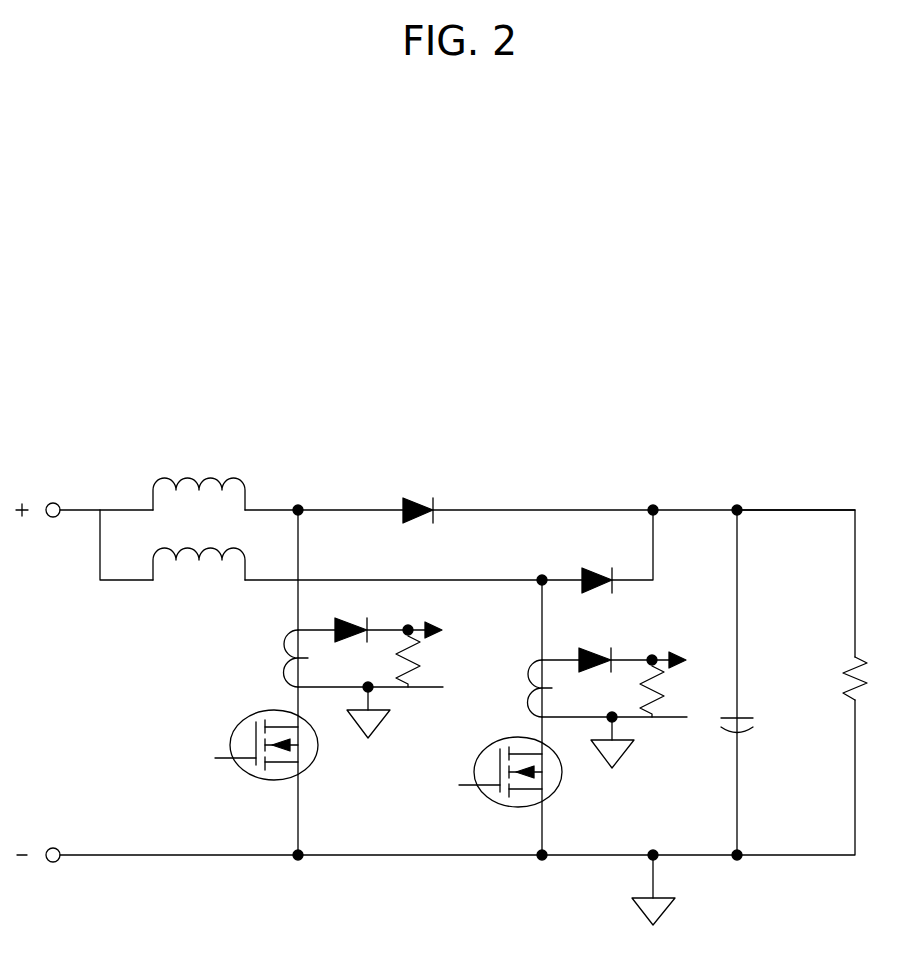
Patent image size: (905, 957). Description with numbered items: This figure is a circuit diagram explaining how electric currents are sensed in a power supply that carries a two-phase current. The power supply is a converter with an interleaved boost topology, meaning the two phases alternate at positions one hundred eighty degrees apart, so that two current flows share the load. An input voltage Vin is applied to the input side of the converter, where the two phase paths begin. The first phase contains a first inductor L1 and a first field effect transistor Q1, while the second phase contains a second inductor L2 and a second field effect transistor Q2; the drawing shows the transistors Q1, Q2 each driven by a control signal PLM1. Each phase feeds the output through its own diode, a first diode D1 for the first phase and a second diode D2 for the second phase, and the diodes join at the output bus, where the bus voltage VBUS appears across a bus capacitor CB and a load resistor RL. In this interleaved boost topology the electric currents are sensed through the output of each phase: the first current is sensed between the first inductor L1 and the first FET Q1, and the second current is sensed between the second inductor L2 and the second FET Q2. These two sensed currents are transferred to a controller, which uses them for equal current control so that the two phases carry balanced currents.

The input voltage Vin is at (35, 682).
The first inductor L1 is at (199, 482).
The second inductor L2 is at (199, 550).
The first diode D1 is at (436, 523).
The second diode D2 is at (607, 565).
The first field effect transistor Q1 is at (285, 751).
The second field effect transistor Q2 is at (532, 777).
The PWM control signal PLM1 is at (331, 773).
The bus voltage VBUS is at (796, 495).
The bus capacitor CB is at (753, 727).
The load resistor RL is at (837, 678).